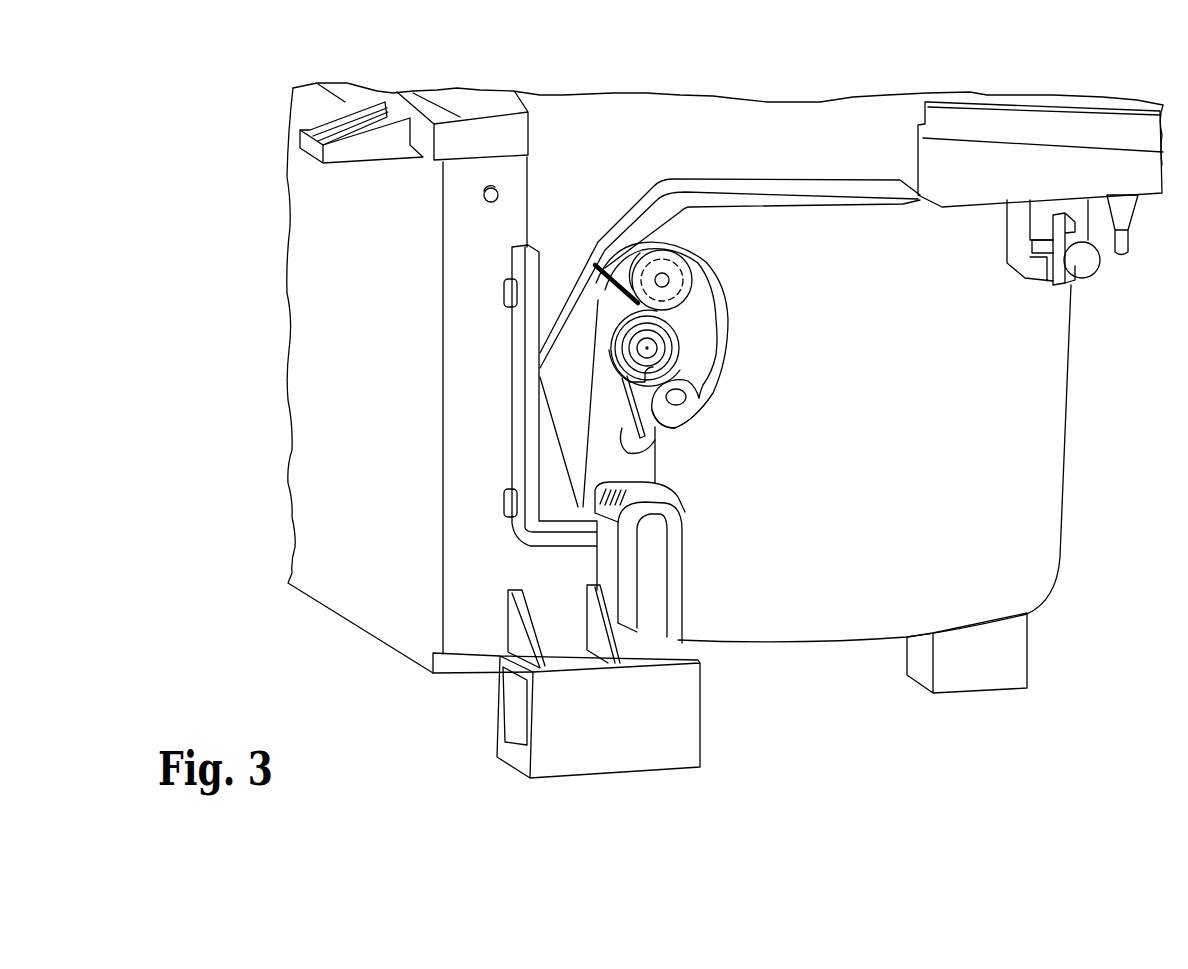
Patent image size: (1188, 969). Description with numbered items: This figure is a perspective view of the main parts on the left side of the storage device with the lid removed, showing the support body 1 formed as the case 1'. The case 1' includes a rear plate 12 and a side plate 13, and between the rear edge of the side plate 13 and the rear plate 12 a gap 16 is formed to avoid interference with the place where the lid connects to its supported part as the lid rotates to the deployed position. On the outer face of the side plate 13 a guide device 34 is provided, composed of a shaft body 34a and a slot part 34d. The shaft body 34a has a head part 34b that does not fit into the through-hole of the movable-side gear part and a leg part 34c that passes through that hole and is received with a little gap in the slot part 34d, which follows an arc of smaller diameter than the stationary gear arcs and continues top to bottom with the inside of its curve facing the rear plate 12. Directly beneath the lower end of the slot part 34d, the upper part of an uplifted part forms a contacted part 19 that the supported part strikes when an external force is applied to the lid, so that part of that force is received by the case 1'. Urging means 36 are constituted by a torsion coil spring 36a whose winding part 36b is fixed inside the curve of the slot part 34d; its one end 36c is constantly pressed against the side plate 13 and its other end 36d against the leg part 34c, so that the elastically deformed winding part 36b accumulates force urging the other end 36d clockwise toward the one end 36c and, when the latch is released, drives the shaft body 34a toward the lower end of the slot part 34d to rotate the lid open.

The support body 1 is at (728, 362).
The case 1' is at (1047, 307).
The rear plate 12 is at (327, 570).
The side plate 13 is at (827, 615).
The gap 16 is at (557, 247).
The contacted part 19 is at (675, 483).
The guide device 34 is at (707, 249).
The shaft body 34a is at (697, 245).
The head part 34b is at (720, 298).
The leg part 34c is at (630, 255).
The slot part 34d is at (715, 383).
The urging means 36 is at (607, 343).
The torsion coil spring 36a is at (509, 354).
The winding part 36b is at (627, 350).
The one end of the spring 36c is at (660, 467).
The other end of the spring 36d is at (607, 310).